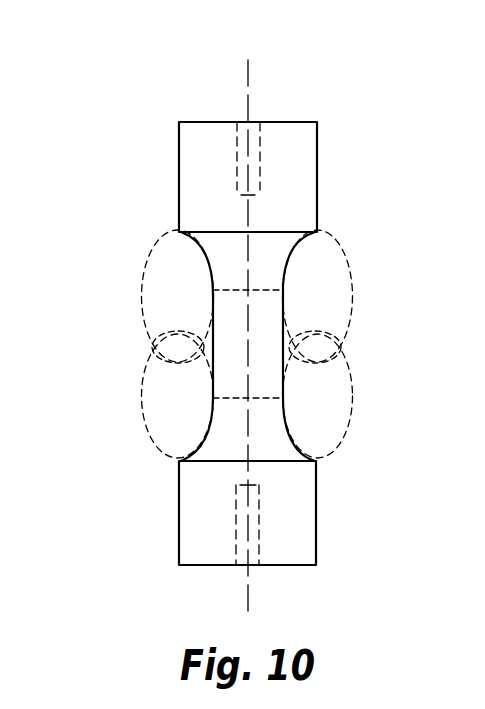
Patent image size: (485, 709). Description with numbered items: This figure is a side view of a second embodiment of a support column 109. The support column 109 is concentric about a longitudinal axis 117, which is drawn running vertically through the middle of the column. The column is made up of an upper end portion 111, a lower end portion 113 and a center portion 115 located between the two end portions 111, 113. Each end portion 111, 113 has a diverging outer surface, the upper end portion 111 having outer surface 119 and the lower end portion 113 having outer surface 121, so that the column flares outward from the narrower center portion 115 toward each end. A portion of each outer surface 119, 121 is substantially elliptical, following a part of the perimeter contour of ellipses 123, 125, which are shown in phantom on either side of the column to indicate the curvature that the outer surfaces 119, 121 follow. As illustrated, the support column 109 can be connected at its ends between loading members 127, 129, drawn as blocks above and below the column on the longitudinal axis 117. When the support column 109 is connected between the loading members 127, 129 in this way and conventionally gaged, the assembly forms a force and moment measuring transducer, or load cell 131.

The support column 109 is at (287, 277).
The upper end portion 111 is at (300, 250).
The lower end portion 113 is at (303, 447).
The center portion 115 is at (213, 345).
The longitudinal axis 117 is at (248, 78).
The outer surface of upper end portion 119 is at (303, 242).
The outer surface of lower end portion 121 is at (285, 422).
The ellipse 123 is at (141, 282).
The ellipse 125 is at (143, 430).
The loading member 127 is at (317, 147).
The loading member 129 is at (316, 520).
The load cell 131 is at (108, 152).